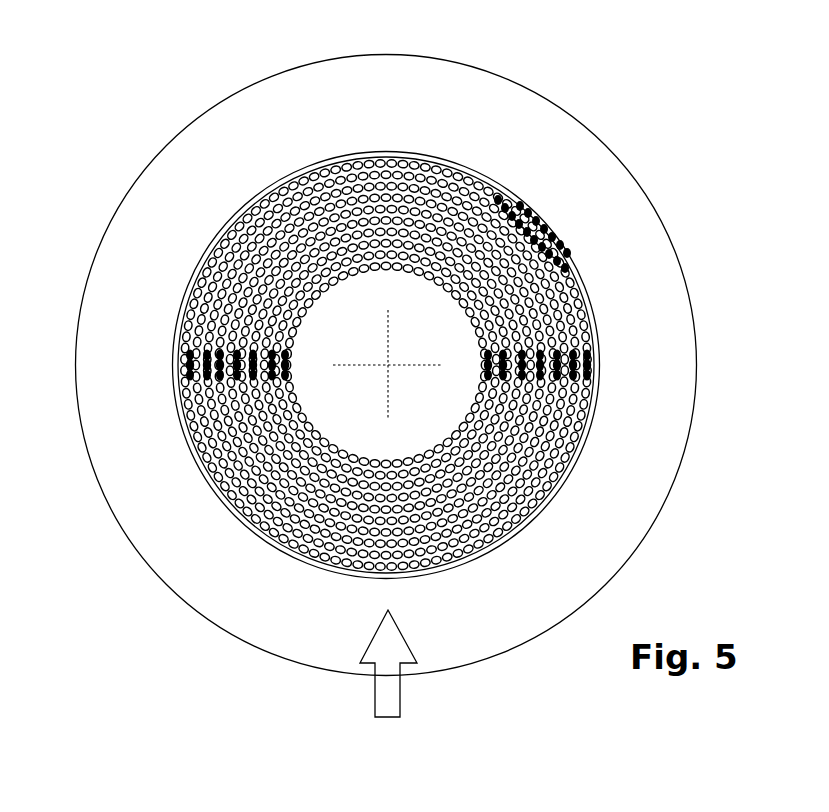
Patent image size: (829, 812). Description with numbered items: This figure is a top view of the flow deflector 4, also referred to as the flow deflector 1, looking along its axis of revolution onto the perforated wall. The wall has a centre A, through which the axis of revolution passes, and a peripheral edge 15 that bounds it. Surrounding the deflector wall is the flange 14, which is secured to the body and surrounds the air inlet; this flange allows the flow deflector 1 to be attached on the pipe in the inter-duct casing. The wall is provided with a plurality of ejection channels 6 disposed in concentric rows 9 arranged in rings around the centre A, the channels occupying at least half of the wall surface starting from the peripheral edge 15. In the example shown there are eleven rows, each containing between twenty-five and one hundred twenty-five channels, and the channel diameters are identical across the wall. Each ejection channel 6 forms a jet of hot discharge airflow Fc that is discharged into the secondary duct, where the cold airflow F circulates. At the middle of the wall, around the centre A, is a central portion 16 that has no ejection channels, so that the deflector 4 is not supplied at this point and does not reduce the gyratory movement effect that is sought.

The flow deflector 1 is at (662, 110).
The flow deflector 4 is at (278, 183).
The ejection channels 6 is at (385, 163).
The concentric rows 9 is at (422, 221).
The flange 14 is at (637, 240).
The peripheral edge 15 is at (593, 287).
The central portion 16 is at (459, 488).
The centre A is at (388, 365).
The cold airflow F is at (391, 663).
The hot discharge airflow Fc is at (588, 342).